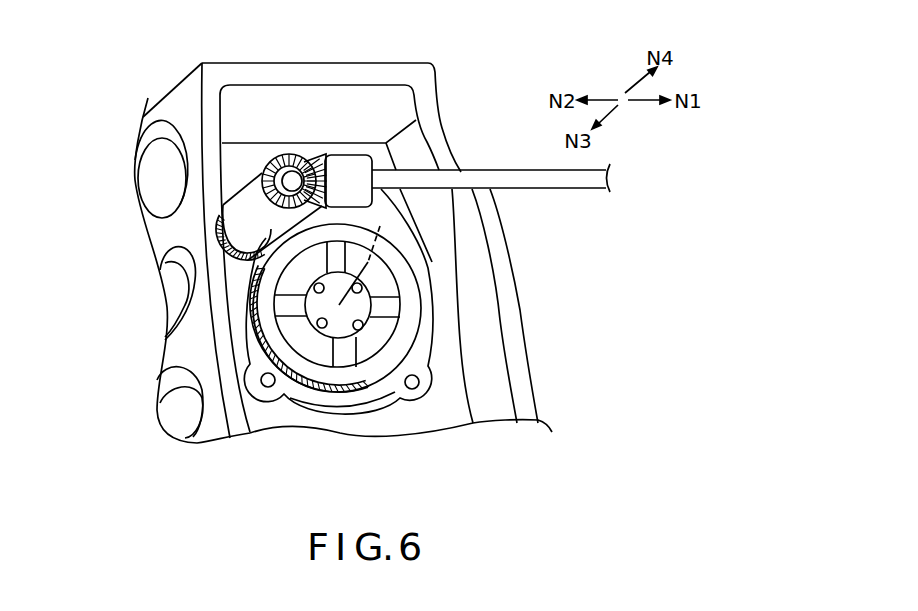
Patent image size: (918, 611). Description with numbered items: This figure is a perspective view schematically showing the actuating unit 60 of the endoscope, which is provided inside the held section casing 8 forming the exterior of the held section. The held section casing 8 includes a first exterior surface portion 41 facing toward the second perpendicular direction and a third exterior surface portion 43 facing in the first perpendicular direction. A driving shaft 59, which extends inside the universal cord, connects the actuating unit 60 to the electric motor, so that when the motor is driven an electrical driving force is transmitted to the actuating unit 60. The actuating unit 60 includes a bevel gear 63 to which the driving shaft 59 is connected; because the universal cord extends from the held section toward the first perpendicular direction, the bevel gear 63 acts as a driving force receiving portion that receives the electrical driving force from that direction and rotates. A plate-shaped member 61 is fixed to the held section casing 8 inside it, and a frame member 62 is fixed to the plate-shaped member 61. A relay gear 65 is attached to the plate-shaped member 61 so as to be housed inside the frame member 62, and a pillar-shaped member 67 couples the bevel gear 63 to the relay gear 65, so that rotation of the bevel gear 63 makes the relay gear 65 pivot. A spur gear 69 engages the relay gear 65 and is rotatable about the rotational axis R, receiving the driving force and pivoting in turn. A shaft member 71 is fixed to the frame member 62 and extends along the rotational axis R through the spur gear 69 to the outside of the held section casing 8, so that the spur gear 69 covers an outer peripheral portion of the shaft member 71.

The held section casing 8 is at (433, 77).
The third exterior surface portion 43 is at (460, 156).
The driving shaft 59 is at (578, 186).
The actuating unit 60 is at (238, 181).
The bevel gear 63 is at (302, 160).
The pillar-shaped member 67 is at (245, 212).
The first exterior surface portion 41 is at (163, 234).
The relay gear 65 is at (232, 262).
The spur gear 69 is at (403, 282).
The plate-shaped member 61 is at (453, 398).
The shaft member 71 is at (345, 335).
The frame member 62 is at (383, 396).
The rotational axis R is at (363, 253).